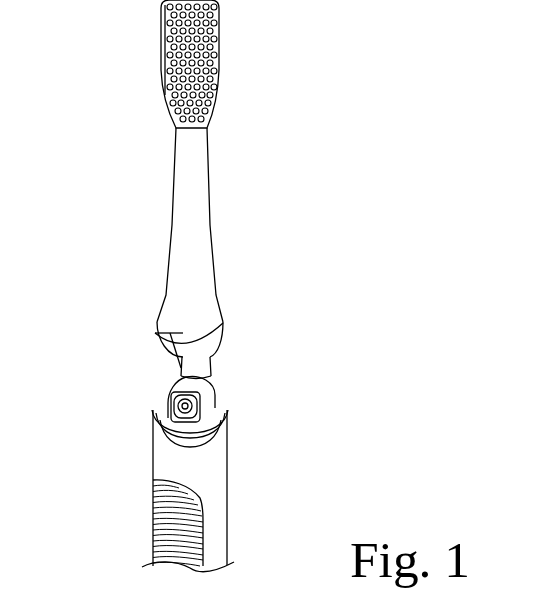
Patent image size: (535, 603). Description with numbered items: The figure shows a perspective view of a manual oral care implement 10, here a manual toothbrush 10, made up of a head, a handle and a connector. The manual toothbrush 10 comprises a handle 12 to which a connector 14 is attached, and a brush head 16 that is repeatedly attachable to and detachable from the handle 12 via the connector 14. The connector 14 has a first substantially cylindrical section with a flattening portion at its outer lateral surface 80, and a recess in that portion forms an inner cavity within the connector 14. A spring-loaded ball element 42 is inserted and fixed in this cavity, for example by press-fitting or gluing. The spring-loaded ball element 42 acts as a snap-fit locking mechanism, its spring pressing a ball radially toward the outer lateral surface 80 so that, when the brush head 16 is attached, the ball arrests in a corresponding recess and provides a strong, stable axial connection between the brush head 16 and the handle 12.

The manual oral care implement 10 is at (215, 187).
The handle 12 is at (164, 470).
The connector 14 is at (205, 378).
The brush head 16 is at (220, 73).
The spring-loaded ball element 42 is at (168, 400).
The outer lateral surface 80 is at (217, 405).